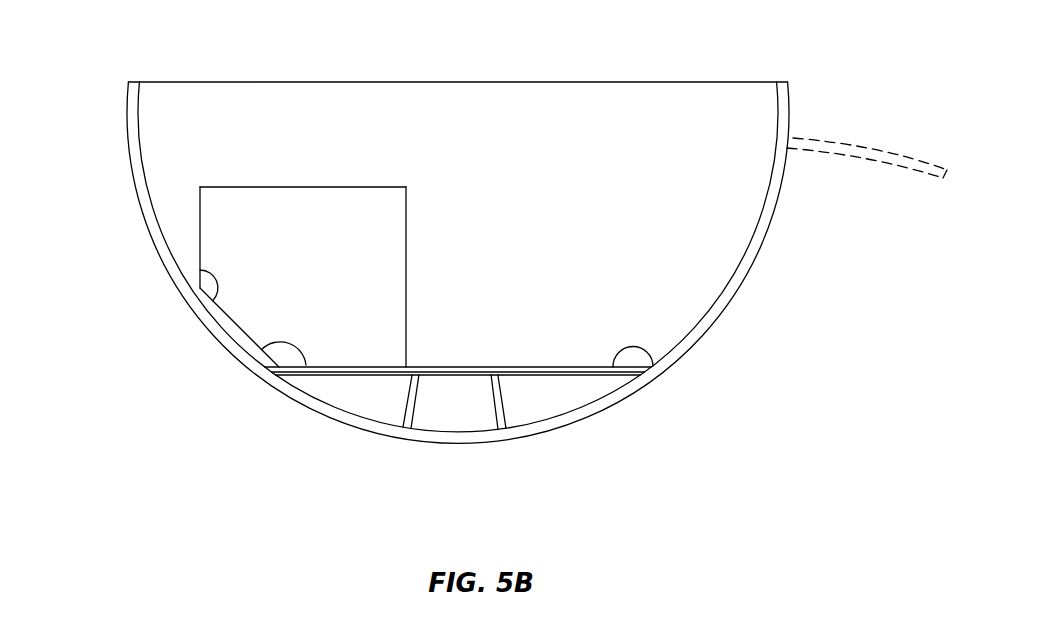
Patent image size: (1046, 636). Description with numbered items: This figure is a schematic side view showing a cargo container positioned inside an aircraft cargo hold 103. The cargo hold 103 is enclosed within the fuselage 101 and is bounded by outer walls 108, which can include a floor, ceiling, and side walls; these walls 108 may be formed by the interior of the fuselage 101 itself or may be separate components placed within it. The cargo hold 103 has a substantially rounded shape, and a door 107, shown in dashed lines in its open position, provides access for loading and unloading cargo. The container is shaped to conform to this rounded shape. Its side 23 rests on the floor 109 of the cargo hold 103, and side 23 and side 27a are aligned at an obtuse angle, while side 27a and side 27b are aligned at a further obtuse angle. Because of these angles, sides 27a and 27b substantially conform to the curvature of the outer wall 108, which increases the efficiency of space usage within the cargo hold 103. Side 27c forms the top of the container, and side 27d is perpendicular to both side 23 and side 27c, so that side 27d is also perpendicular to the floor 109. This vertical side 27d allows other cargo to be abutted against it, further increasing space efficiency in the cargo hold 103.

The fuselage 101 is at (722, 312).
The cargo hold 103 is at (222, 163).
The door 107 is at (845, 138).
The outer wall 108 is at (607, 82).
The floor 109 is at (660, 364).
The side 23 is at (338, 362).
The side 27a is at (240, 318).
The side 27b is at (197, 228).
The side 27c is at (302, 187).
The side 27d is at (407, 238).